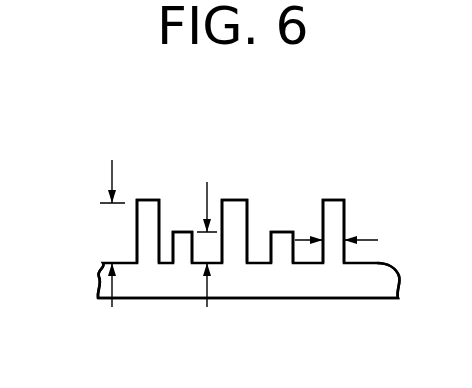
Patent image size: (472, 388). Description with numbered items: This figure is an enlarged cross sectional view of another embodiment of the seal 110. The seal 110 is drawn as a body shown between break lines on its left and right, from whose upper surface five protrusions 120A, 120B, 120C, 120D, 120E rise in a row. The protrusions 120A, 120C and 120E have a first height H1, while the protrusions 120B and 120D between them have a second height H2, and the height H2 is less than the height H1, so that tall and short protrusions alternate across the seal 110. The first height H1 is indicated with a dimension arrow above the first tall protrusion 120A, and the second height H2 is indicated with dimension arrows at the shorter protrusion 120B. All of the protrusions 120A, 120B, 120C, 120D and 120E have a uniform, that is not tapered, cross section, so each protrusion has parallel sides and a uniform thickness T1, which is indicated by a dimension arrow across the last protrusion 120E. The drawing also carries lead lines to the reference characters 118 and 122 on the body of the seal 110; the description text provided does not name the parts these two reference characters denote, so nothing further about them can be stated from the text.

The seal 110 is at (357, 123).
The base 118 is at (115, 262).
The base portion 122 is at (238, 283).
The protrusion 120A is at (147, 208).
The protrusion 120B is at (183, 238).
The protrusion 120C is at (233, 207).
The protrusion 120D is at (282, 238).
The protrusion 120E is at (333, 206).
The first height H1 is at (110, 170).
The second height H2 is at (203, 292).
The uniform thickness T1 is at (352, 240).